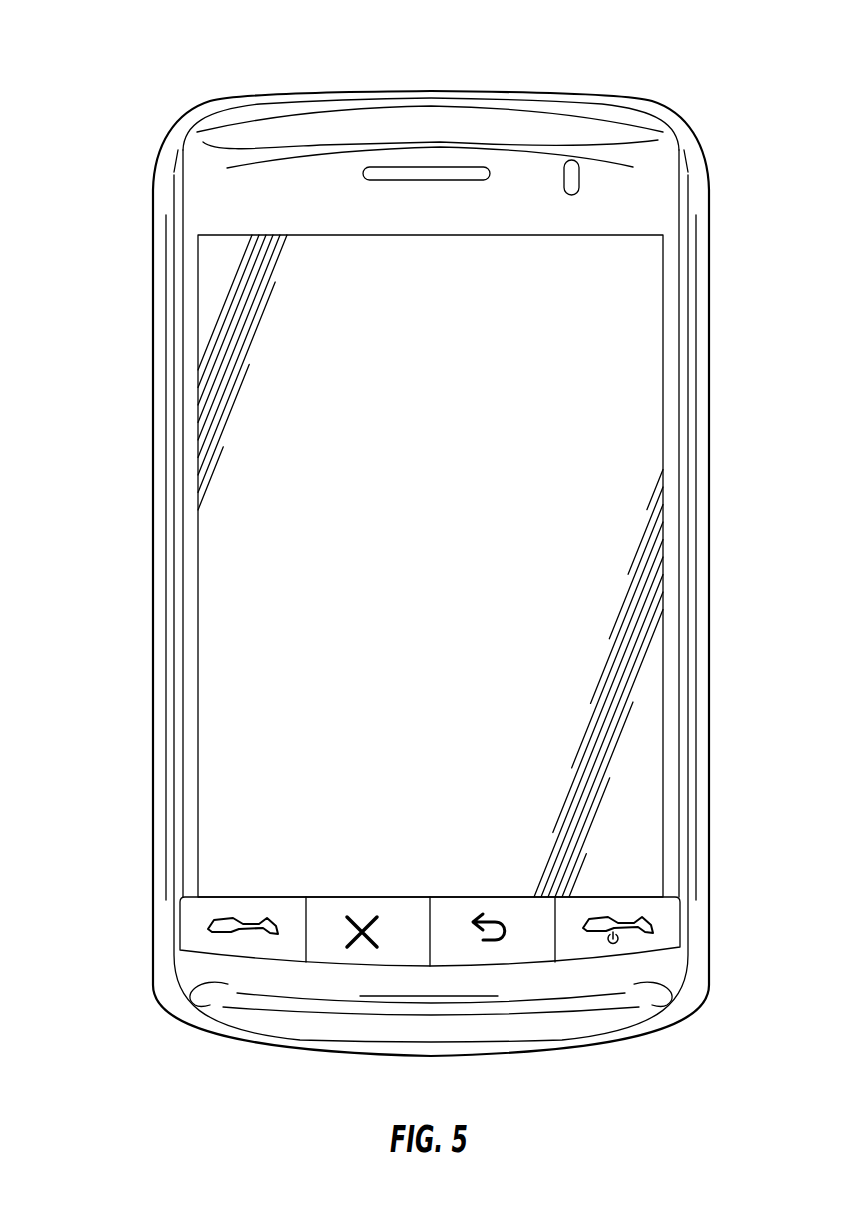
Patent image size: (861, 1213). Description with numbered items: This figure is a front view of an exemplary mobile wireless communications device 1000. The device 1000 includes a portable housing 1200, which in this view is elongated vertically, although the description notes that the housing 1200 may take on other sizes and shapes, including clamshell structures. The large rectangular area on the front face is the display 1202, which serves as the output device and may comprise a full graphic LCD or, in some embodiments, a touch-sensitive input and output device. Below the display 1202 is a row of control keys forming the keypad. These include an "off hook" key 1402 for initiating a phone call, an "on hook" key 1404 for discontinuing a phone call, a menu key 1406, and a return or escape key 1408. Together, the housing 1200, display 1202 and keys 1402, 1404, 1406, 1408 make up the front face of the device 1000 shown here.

The mobile wireless communications device 1000 is at (162, 96).
The portable housing 1200 is at (152, 300).
The display 1202 is at (647, 438).
The "off hook" key 1402 is at (215, 943).
The "on hook" key 1404 is at (572, 948).
The menu key 1406 is at (330, 918).
The return or escape key 1408 is at (537, 932).